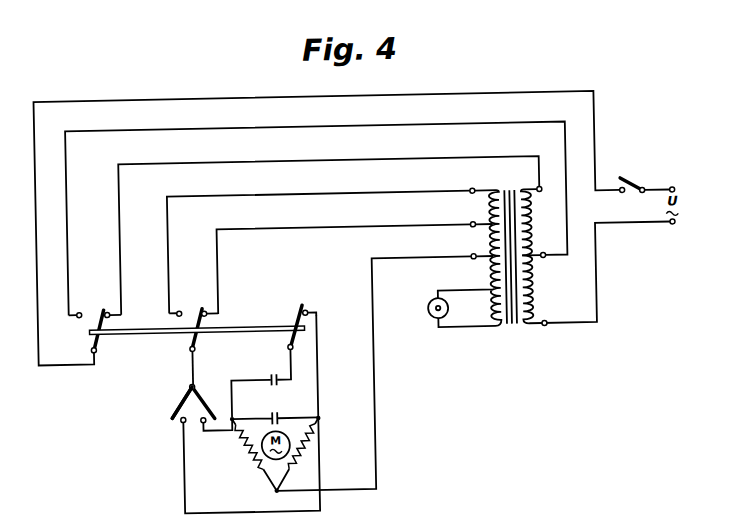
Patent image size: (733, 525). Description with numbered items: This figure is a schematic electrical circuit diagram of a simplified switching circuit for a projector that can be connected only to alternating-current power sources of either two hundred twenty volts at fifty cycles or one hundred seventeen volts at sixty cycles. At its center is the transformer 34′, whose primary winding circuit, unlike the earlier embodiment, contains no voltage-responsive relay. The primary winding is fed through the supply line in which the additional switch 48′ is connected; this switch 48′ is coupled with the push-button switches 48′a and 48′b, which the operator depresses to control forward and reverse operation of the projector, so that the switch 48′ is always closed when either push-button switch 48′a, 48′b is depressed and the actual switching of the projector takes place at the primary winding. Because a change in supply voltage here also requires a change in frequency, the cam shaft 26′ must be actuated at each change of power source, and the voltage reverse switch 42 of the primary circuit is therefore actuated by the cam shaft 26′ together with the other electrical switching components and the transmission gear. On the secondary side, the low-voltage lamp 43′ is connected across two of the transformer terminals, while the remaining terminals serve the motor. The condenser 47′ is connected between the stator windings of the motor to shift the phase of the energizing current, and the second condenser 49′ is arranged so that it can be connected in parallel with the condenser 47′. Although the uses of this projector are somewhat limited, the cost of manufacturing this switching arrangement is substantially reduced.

The voltage reverse switch 42 is at (99, 313).
The cam shaft 26′ is at (141, 336).
The additional switch 48′ is at (631, 189).
The push-button switch 48′a is at (183, 392).
The push-button switch 48′b is at (190, 390).
The second condenser 49′ is at (266, 380).
The condenser 47′ is at (266, 418).
The low-voltage lamp 43′ is at (424, 316).
The transformer 34′ is at (509, 336).